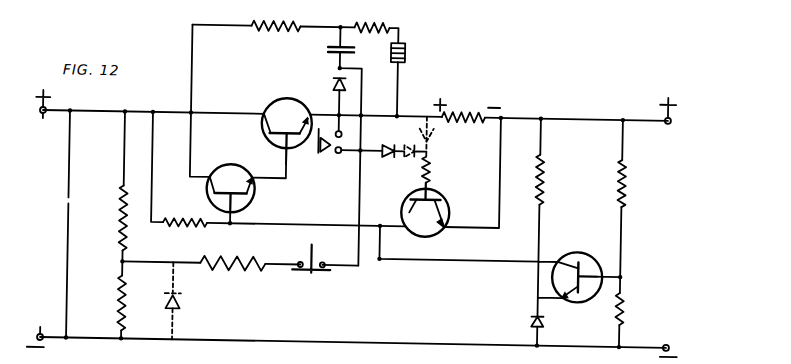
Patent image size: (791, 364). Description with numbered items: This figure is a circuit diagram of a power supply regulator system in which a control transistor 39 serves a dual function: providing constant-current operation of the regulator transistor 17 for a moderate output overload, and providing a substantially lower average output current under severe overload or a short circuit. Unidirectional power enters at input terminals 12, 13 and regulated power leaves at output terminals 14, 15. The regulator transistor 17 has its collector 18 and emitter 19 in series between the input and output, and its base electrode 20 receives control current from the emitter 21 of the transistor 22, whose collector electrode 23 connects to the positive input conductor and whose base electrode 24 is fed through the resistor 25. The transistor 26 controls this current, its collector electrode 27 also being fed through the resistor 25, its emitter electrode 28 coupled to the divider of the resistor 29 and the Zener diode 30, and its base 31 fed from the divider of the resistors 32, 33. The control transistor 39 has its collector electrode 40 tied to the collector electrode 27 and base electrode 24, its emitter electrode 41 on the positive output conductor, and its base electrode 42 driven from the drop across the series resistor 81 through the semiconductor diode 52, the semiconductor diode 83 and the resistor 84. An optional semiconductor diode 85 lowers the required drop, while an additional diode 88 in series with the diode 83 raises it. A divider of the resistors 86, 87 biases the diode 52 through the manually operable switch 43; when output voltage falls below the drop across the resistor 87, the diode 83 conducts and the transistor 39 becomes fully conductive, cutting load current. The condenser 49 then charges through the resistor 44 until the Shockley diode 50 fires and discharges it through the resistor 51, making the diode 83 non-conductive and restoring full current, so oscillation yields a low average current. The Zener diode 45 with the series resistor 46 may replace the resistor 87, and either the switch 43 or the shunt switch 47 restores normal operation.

The input terminal 12 is at (40, 115).
The input terminal 13 is at (39, 327).
The output terminal 14 is at (671, 112).
The output terminal 15 is at (673, 334).
The regulator transistor 17 is at (286, 93).
The collector 18 is at (262, 125).
The emitter 19 is at (311, 110).
The base electrode 20 is at (292, 143).
The emitter 21 is at (258, 188).
The transistor 22 is at (232, 160).
The collector electrode 23 is at (208, 187).
The base electrode 24 is at (241, 200).
The resistor 25 is at (189, 224).
The transistor 26 is at (594, 247).
The collector electrode 27 is at (581, 253).
The emitter electrode 28 is at (572, 291).
The resistor 29 is at (548, 165).
The Zener diode 30 is at (550, 311).
The base 31 is at (583, 265).
The resistor 32 is at (630, 169).
The resistor 33 is at (626, 290).
The control transistor 39 is at (440, 229).
The collector electrode 40 is at (403, 202).
The emitter electrode 41 is at (450, 205).
The base electrode 42 is at (442, 181).
The manually operable switch 43 is at (320, 268).
The resistor 44 is at (275, 18).
The Zener diode 45 is at (185, 292).
The series resistor 46 is at (254, 266).
The shunt switch 47 is at (321, 147).
The condenser 49 is at (325, 45).
The Shockley 4-layer semiconductive diode 50 is at (406, 46).
The current limiting protective resistor 51 is at (374, 17).
The semiconductor diode 52 is at (345, 80).
The series resistor 81 is at (452, 106).
The semiconductor diode 83 is at (383, 161).
The resistor 84 is at (429, 158).
The semiconductor diode 85 is at (421, 108).
The resistor 86 is at (124, 224).
The resistor 87 is at (124, 302).
The additional diode 88 is at (416, 128).